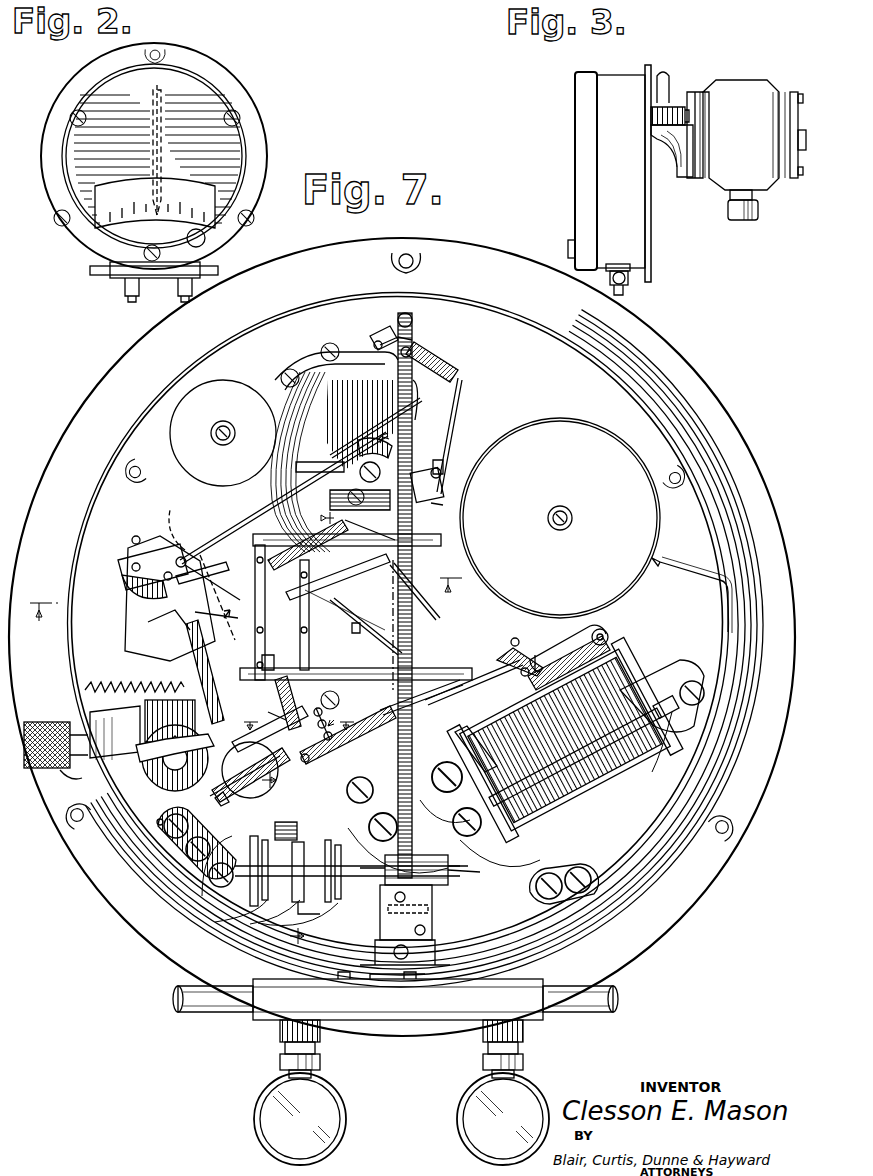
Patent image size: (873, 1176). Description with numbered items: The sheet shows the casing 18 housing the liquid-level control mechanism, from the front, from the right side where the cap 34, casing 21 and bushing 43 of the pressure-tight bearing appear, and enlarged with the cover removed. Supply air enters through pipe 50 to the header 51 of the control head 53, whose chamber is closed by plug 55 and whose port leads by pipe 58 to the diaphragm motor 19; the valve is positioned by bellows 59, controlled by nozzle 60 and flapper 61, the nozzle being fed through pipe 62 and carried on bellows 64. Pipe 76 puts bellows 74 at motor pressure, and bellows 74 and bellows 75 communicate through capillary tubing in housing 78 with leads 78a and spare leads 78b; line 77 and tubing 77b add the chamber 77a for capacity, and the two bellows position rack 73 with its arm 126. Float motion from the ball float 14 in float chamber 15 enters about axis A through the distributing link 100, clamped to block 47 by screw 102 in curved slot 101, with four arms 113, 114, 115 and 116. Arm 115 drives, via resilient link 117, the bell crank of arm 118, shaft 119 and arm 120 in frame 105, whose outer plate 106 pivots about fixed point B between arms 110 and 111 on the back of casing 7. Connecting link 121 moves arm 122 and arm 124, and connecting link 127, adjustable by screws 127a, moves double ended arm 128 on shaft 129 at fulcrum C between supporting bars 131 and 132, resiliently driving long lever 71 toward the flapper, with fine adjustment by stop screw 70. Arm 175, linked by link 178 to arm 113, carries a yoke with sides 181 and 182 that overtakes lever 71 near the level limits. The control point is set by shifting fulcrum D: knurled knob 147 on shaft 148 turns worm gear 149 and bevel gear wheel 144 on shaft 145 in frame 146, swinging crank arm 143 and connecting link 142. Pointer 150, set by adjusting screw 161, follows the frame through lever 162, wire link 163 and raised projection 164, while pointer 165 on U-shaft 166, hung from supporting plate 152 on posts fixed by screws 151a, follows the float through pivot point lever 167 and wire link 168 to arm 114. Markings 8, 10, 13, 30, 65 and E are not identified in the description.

In FIG. 2, the casing 18 is at (243, 78).
In FIG. 3, the casing 18 is at (571, 120).
In FIG. 7, the casing 18 is at (711, 365).
In FIG. 2, the pointer 165 is at (160, 158).
In FIG. 7, the pointer 165 is at (411, 598).
In FIG. 2, the header 51 is at (125, 270).
In FIG. 3, the header 51 is at (628, 282).
In FIG. 7, the header 51 is at (405, 1002).
In FIG. 3, the casing 7 is at (623, 66).
In FIG. 3, the bushing 43 is at (677, 178).
In FIG. 3, the casing 21 is at (738, 88).
In FIG. 3, the flange 30 is at (788, 92).
In FIG. 3, the cap 34 is at (730, 212).
In FIG. 7, the housing 78 is at (190, 436).
In FIG. 7, the chamber 77a is at (562, 442).
In FIG. 7, the piping or tubing 77b is at (680, 566).
In FIG. 7, the line 77 is at (604, 798).
In FIG. 7, the supporting plate 152 is at (312, 362).
In FIG. 7, the screws 151a is at (280, 372).
In FIG. 7, the adjusting screw 161 is at (390, 326).
In FIG. 7, the U-shaft 166 is at (406, 338).
In FIG. 7, the pivot point lever 167 is at (447, 372).
In FIG. 7, the wire link 168 is at (452, 398).
In FIG. 7, the wire link 163 is at (383, 420).
In FIG. 7, the lever 162 is at (430, 408).
In FIG. 7, the distributing link 100 is at (424, 470).
In FIG. 7, the upper arm 113 is at (442, 468).
In FIG. 7, the arm 114 is at (443, 513).
In FIG. 7, the arm 116 is at (316, 462).
In FIG. 7, the curved slot 101 is at (356, 488).
In FIG. 7, the block 47 is at (330, 496).
In FIG. 7, the screw 102 is at (355, 507).
In FIG. 7, the arm 115 is at (370, 532).
In FIG. 7, the section line 10 is at (326, 512).
In FIG. 7, the axis A is at (386, 438).
In FIG. 7, the arm 120 is at (442, 540).
In FIG. 7, the section line 8 is at (241, 594).
In FIG. 7, the pointer 150 is at (412, 640).
In FIG. 7, the arm 122 is at (428, 668).
In FIG. 7, the depending side 181 is at (277, 612).
In FIG. 7, the connecting link 121 is at (288, 615).
In FIG. 7, the leads 78a is at (319, 638).
In FIG. 7, the resilient link 117 is at (340, 556).
In FIG. 7, the long lever 71 is at (318, 580).
In FIG. 7, the depending side 182 is at (330, 596).
In FIG. 7, the link 178 is at (366, 626).
In FIG. 7, the fulcrum D is at (197, 526).
In FIG. 7, the outer plate 106 is at (188, 514).
In FIG. 7, the raised projection 164 is at (176, 560).
In FIG. 7, the shaft 119 is at (185, 560).
In FIG. 7, the arm 110 is at (132, 572).
In FIG. 7, the arm 111 is at (128, 590).
In FIG. 7, the arm 118 is at (216, 573).
In FIG. 7, the fixed point B is at (234, 620).
In FIG. 7, the frame 105 is at (232, 630).
In FIG. 7, the connecting link 142 is at (196, 640).
In FIG. 7, the knurled knob 147 is at (44, 722).
In FIG. 7, the shaft 148 is at (60, 770).
In FIG. 7, the frame 146 is at (108, 712).
In FIG. 7, the worm gear 149 is at (166, 704).
In FIG. 7, the bevel gear wheel 144 is at (168, 786).
In FIG. 7, the shaft 145 is at (165, 770).
In FIG. 7, the crank arm 143 is at (210, 744).
In FIG. 7, the shaft 129 is at (288, 710).
In FIG. 7, the fixed fulcrum point C is at (270, 716).
In FIG. 7, the section line 13 is at (303, 720).
In FIG. 7, the ball float 14 is at (336, 728).
In FIG. 7, the arm 175 is at (322, 693).
In FIG. 7, the float chamber 15 is at (316, 720).
In FIG. 7, the double ended arm 128 is at (316, 760).
In FIG. 7, the supporting bar 132 is at (212, 792).
In FIG. 7, the adjustable stop screw 70 is at (236, 796).
In FIG. 7, the supporting bar 131 is at (245, 800).
In FIG. 7, the terminal strip 65 is at (165, 856).
In FIG. 7, the bellows 64 is at (250, 918).
In FIG. 7, the control head 53 is at (376, 882).
In FIG. 7, the nozzle 60 is at (304, 842).
In FIG. 7, the flapper 61 is at (298, 824).
In FIG. 7, the diaphragm motor 19 is at (285, 858).
In FIG. 7, the bellows 59 is at (385, 866).
In FIG. 7, the pipe 76 is at (434, 896).
In FIG. 7, the plug 55 is at (460, 874).
In FIG. 7, the pipe 62 is at (378, 948).
In FIG. 7, the leads 78b is at (473, 832).
In FIG. 7, the bellows 74 is at (500, 756).
In FIG. 7, the rack 73 is at (540, 692).
In FIG. 7, the arm 126 is at (588, 630).
In FIG. 7, the arm 124 is at (522, 648).
In FIG. 7, the pivot E is at (540, 655).
In FIG. 7, the screws 127a is at (474, 682).
In FIG. 7, the connecting link 127 is at (445, 696).
In FIG. 7, the bellows 75 is at (618, 700).
In FIG. 7, the pipe 58 is at (198, 1002).
In FIG. 7, the pipe 50 is at (588, 1006).